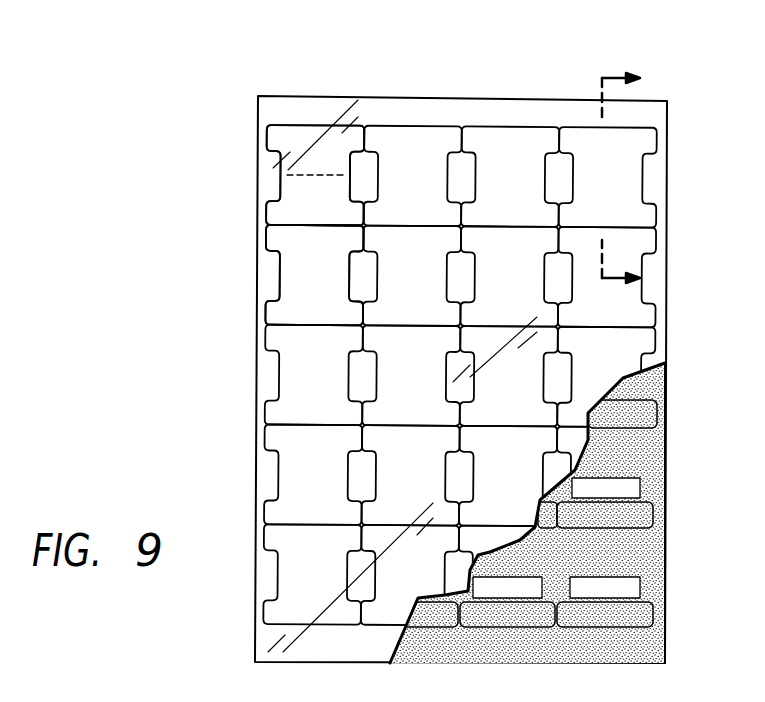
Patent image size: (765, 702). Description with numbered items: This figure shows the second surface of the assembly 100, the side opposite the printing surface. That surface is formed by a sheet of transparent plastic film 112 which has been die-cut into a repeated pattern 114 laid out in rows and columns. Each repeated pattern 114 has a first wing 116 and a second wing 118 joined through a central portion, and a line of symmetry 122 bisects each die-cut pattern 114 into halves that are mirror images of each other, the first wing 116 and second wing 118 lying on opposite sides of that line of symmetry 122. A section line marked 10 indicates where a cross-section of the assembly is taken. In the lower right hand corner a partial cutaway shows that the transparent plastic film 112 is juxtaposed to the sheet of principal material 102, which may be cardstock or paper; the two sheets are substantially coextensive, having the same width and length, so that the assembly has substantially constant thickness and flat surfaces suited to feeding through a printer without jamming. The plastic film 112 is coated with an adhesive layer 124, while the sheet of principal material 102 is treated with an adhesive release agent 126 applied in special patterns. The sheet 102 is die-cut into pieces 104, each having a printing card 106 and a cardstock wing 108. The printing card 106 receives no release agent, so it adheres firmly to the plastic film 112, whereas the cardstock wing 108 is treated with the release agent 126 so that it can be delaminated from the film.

The assembly 100 is at (188, 413).
The sheet of principal material 102 is at (663, 588).
The die-cut portion 104 is at (650, 621).
The printing card 106 is at (633, 488).
The cardstock wing 108 is at (645, 520).
The sheet of transparent plastic film 112 is at (407, 112).
The repeated pattern 114 is at (642, 182).
The first wing 116 is at (265, 137).
The second wing 118 is at (265, 212).
The line of symmetry 122 is at (287, 175).
The adhesive layer 124 is at (650, 373).
The adhesive release agent 126 is at (645, 562).
The section line 10- 10 is at (620, 180).